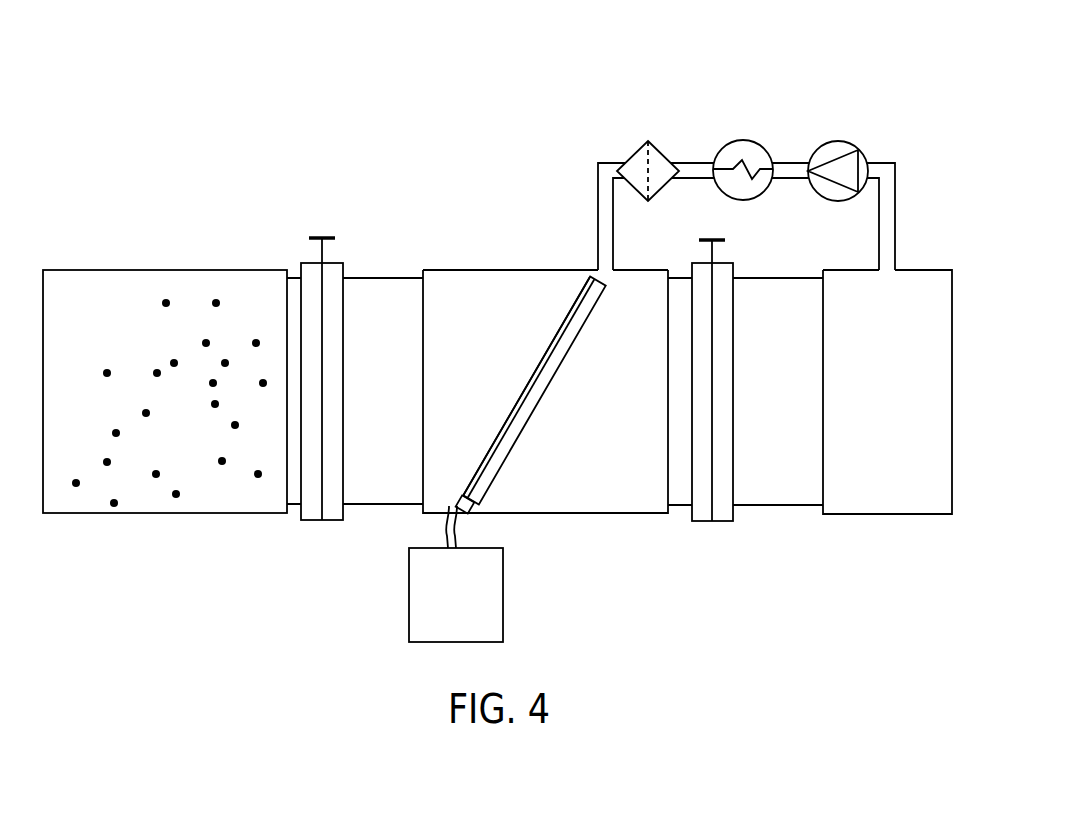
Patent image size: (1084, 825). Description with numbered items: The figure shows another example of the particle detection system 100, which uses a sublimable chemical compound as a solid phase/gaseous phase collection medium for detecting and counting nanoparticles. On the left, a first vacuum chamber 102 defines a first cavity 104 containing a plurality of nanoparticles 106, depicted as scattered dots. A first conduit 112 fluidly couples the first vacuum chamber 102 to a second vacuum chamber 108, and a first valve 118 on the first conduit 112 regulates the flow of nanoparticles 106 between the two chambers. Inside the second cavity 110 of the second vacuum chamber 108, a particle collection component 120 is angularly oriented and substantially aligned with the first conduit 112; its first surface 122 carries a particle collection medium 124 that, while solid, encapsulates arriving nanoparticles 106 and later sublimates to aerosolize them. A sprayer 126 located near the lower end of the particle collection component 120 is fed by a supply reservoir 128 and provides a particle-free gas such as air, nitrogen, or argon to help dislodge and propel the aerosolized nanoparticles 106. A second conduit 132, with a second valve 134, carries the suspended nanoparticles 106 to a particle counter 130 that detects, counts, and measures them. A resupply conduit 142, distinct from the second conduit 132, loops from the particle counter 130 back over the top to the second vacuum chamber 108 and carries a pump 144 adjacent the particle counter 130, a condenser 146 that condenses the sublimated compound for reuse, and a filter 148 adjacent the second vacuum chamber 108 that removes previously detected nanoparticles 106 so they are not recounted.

The particle detection system 100 is at (466, 72).
The first vacuum chamber 102 is at (130, 270).
The first cavity 104 is at (113, 321).
The plurality of nanoparticles 106 is at (216, 298).
The second vacuum chamber 108 is at (490, 270).
The second cavity 110 is at (471, 321).
The first conduit 112 is at (396, 278).
The first valve 118 is at (322, 236).
The particle collection component 120 is at (538, 400).
The first surface 122 is at (565, 313).
The particle collection medium 124 is at (588, 276).
The sprayer 126 is at (450, 498).
The supply reservoir 128 is at (474, 608).
The particle counter 130 is at (905, 515).
The second conduit 132 is at (777, 506).
The second valve 134 is at (724, 240).
The resupply conduit 142 is at (895, 215).
The pump 144 is at (838, 141).
The condenser 146 is at (743, 140).
The filter 148 is at (648, 141).